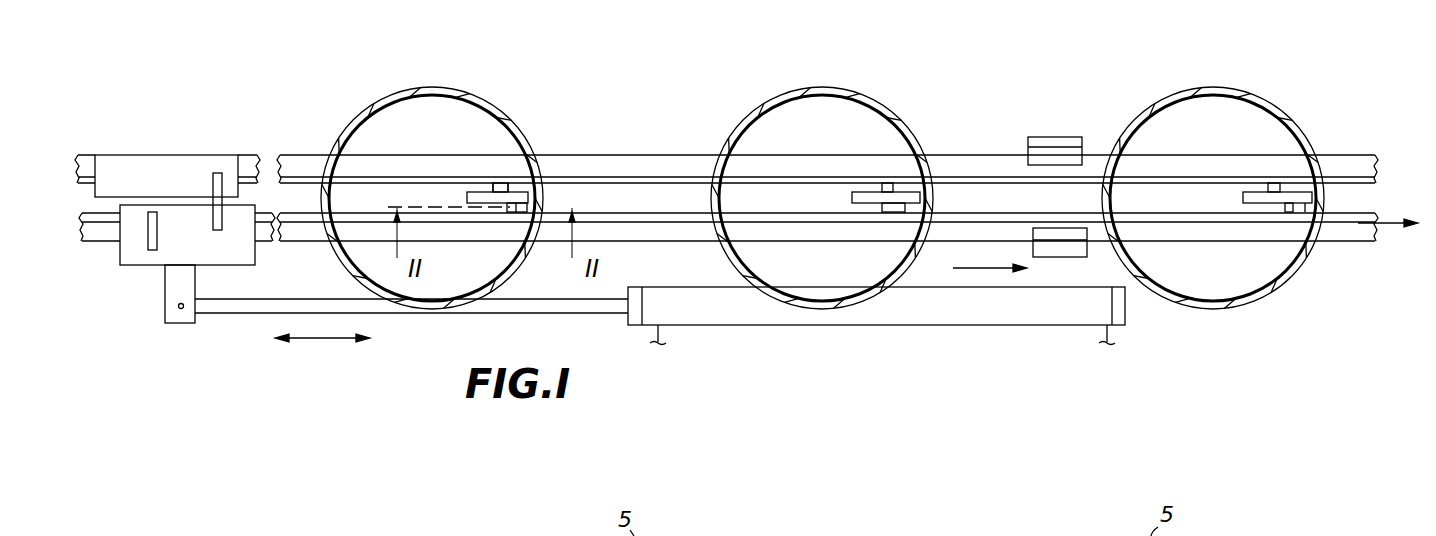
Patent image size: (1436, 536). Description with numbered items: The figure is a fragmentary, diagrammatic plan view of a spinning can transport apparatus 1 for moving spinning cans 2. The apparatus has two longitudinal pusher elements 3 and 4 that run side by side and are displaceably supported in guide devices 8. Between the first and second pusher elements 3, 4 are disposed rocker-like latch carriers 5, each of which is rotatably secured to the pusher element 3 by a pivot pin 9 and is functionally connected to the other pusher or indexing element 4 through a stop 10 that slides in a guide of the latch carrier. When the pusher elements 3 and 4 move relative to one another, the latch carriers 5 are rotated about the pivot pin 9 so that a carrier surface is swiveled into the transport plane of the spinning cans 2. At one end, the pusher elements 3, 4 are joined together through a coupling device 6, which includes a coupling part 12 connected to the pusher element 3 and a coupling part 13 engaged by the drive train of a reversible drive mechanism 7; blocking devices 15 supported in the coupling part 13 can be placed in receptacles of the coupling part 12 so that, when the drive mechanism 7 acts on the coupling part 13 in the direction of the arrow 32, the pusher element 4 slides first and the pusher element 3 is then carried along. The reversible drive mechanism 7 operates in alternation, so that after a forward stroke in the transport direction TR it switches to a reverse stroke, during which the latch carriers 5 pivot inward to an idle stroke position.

The spinning can transport apparatus 1 is at (912, 97).
The spinning can 2 is at (490, 103).
The pusher element 3 is at (1345, 155).
The pusher element 4 is at (1348, 230).
The latch carrier 5 is at (467, 193).
The coupling device 6 is at (181, 125).
The reversible drive mechanism 7 is at (723, 305).
The guide device 8 is at (1060, 137).
The pivot pin 9 is at (505, 185).
The stop 10 is at (1285, 207).
The coupling part 12 is at (133, 163).
The coupling part 13 is at (132, 243).
The blocking device 15 is at (218, 175).
The arrow 32 is at (1392, 223).
The transport direction TR is at (982, 272).